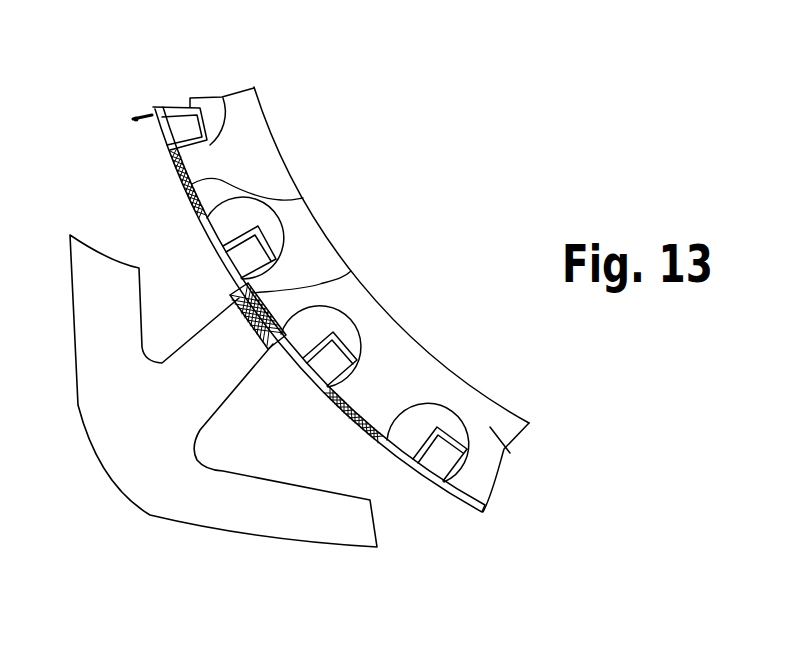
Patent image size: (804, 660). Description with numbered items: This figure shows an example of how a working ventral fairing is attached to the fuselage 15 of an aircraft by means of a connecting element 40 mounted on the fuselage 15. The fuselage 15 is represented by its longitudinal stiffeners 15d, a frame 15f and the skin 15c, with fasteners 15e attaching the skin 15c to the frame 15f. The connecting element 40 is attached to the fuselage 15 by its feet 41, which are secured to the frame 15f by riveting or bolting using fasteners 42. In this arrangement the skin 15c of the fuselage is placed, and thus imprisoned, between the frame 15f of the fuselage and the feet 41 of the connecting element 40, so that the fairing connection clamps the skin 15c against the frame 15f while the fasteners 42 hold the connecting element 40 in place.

The fuselage 15 is at (278, 140).
The skin 15c is at (133, 120).
The longitudinal stiffeners 15d is at (188, 97).
The fasteners 15e is at (303, 198).
The frame 15f is at (510, 453).
The connecting element 40 is at (167, 500).
The feet 41 is at (250, 350).
The fasteners 42 is at (351, 271).